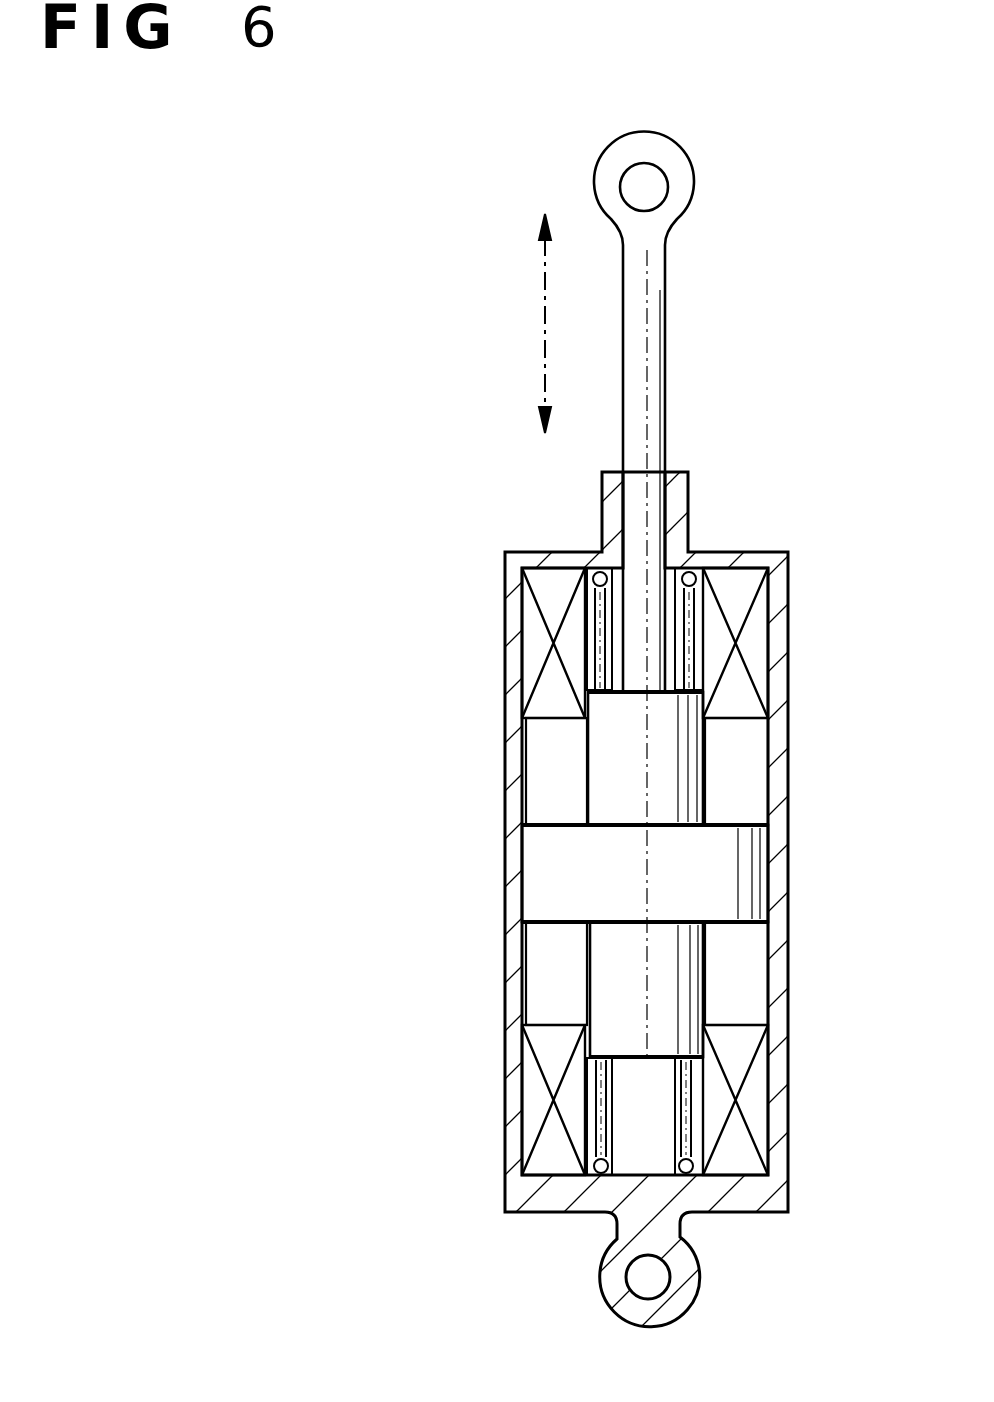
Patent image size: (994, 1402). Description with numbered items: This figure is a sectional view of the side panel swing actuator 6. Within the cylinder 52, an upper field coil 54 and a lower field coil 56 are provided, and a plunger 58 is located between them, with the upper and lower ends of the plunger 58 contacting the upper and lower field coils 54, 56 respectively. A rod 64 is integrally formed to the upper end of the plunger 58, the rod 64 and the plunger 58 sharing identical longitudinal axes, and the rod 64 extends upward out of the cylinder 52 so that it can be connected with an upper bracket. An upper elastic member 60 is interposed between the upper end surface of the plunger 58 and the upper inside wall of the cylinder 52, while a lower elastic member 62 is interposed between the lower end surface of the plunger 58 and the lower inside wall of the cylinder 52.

The side panel swing actuator 6 is at (653, 728).
The cylinder 52 is at (508, 897).
The upper field coil 54 is at (748, 705).
The lower field coil 56 is at (762, 1067).
The plunger 58 is at (750, 860).
The upper elastic member 60 is at (705, 665).
The lower elastic member 62 is at (700, 1160).
The rod 64 is at (660, 410).